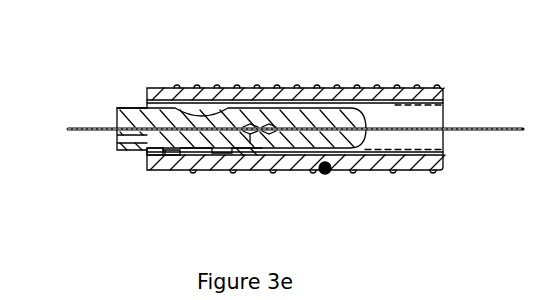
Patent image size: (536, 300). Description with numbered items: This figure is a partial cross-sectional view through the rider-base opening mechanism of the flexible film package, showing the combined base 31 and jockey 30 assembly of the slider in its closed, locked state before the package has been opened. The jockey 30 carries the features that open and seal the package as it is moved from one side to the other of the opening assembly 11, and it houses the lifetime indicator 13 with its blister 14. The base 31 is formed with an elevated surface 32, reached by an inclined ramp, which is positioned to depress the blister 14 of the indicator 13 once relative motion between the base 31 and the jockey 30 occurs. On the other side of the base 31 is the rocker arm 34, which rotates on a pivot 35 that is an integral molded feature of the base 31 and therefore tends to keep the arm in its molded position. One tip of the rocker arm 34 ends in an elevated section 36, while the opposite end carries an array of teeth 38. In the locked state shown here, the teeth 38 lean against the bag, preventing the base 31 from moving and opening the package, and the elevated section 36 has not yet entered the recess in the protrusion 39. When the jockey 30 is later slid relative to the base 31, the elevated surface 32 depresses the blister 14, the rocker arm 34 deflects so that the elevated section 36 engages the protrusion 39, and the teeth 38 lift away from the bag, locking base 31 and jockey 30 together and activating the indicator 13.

The opening assembly 11 is at (81, 156).
The lifetime indicator 13 is at (388, 80).
The blister 14 is at (224, 86).
The jockey 30 is at (330, 173).
The base 31 is at (102, 85).
The elevated surface 32 is at (125, 80).
The rocker arm 34 is at (260, 168).
The pivot 35 is at (176, 177).
The elevated section 36 is at (156, 182).
The teeth 38 is at (287, 155).
The protrusion 39 is at (224, 180).